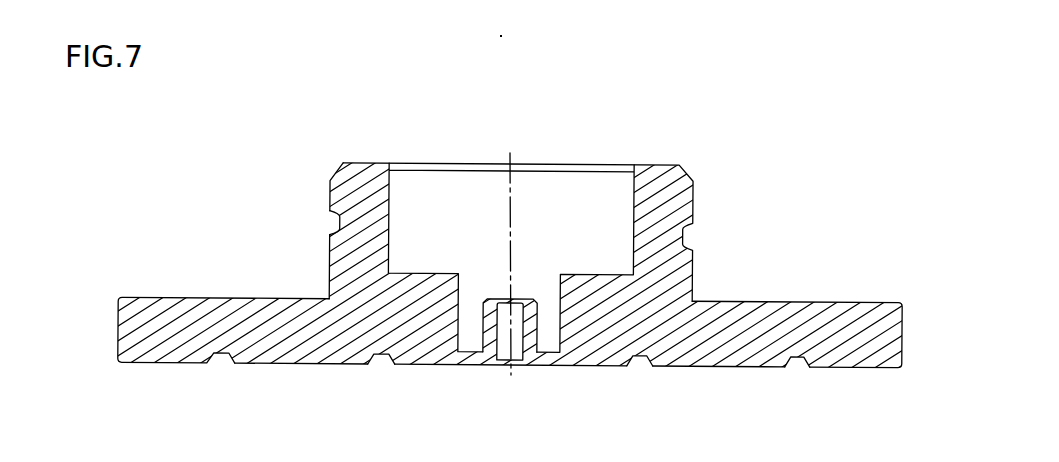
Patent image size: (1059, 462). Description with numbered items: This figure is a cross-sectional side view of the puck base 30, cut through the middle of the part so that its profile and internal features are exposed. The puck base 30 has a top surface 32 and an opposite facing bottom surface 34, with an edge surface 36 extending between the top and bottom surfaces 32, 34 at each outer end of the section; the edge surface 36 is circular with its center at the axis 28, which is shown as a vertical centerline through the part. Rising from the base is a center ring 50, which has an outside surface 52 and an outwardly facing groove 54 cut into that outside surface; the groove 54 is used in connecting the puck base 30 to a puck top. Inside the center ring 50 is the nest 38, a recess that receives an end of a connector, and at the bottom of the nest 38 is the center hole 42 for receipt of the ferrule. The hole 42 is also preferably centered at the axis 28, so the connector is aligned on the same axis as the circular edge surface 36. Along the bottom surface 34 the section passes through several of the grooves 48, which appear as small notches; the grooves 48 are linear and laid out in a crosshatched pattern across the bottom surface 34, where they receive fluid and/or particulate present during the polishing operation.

The axis 28 is at (510, 182).
The puck base 30 is at (220, 205).
The top surface 32 is at (793, 302).
The bottom surface 34 is at (292, 363).
The edge surface 36 is at (118, 328).
The nest 38 is at (560, 288).
The center hole 42 is at (523, 356).
The grooves 48 is at (368, 363).
The center ring 50 is at (663, 165).
The outside surface 52 is at (330, 273).
The outwardly facing groove 54 is at (342, 232).